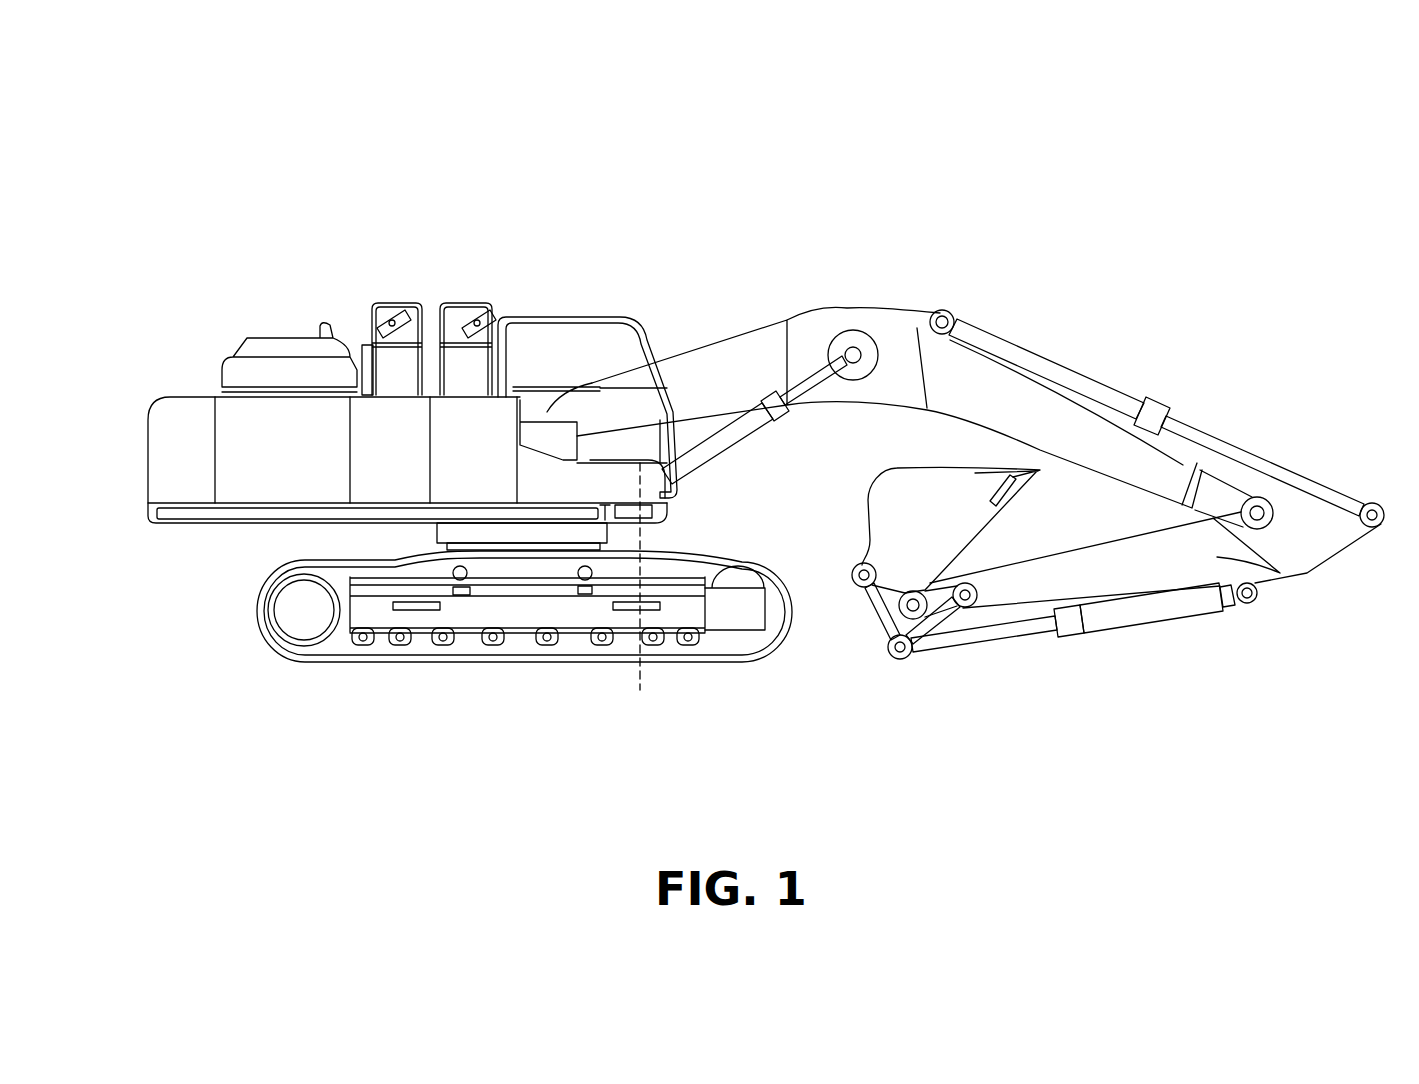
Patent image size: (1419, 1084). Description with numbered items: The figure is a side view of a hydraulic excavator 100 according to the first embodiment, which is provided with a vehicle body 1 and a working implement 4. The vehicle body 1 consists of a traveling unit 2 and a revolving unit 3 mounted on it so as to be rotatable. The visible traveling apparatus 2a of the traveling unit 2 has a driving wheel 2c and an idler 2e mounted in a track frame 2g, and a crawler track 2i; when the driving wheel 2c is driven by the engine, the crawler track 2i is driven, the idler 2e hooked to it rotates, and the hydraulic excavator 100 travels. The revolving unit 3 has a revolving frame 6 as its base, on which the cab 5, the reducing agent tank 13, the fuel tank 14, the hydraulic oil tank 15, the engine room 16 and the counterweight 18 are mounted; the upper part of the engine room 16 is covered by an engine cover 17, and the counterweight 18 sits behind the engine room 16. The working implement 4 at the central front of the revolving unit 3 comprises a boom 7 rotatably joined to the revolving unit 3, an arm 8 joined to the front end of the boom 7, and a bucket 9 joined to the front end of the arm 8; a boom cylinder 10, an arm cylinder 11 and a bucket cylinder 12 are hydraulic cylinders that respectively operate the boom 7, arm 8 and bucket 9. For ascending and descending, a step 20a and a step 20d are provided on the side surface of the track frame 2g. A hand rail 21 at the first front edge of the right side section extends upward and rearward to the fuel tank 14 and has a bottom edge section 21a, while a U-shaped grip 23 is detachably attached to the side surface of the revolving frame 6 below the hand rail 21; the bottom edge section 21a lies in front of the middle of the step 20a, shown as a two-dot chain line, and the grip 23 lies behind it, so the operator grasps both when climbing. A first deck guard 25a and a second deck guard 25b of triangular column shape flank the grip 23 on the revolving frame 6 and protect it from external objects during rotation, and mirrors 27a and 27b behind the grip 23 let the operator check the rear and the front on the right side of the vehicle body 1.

The hydraulic excavator 100 is at (740, 243).
The vehicle body 1 is at (293, 302).
The traveling unit 2 is at (322, 663).
The traveling apparatus 2a is at (258, 616).
The driving wheel 2c is at (300, 596).
The idler 2e is at (772, 582).
The track frame 2g is at (517, 607).
The crawler track 2i is at (360, 663).
The revolving unit 3 is at (192, 320).
The working implement 4 is at (1147, 375).
The cab 5 is at (645, 302).
The revolving frame 6 is at (528, 530).
The boom 7 is at (752, 340).
The arm 8 is at (1267, 578).
The bucket 9 is at (893, 505).
The boom cylinder 10 is at (772, 418).
The arm cylinder 11 is at (1055, 372).
The bucket cylinder 12 is at (1118, 612).
The reducing agent tank 13 is at (551, 437).
The fuel tank 14 is at (452, 440).
The hydraulic oil tank 15 is at (365, 440).
The engine room 16 is at (282, 417).
The engine cover 17 is at (250, 353).
The counterweight 18 is at (187, 432).
The step 20a is at (653, 607).
The step 20d is at (413, 603).
The hand rail 21 is at (612, 318).
The bottom edge section 21a is at (695, 485).
The grip 23 is at (600, 540).
The first deck guard 25a is at (188, 515).
The second deck guard 25b is at (670, 516).
The mirror 27a is at (467, 312).
The mirror 27b is at (393, 312).